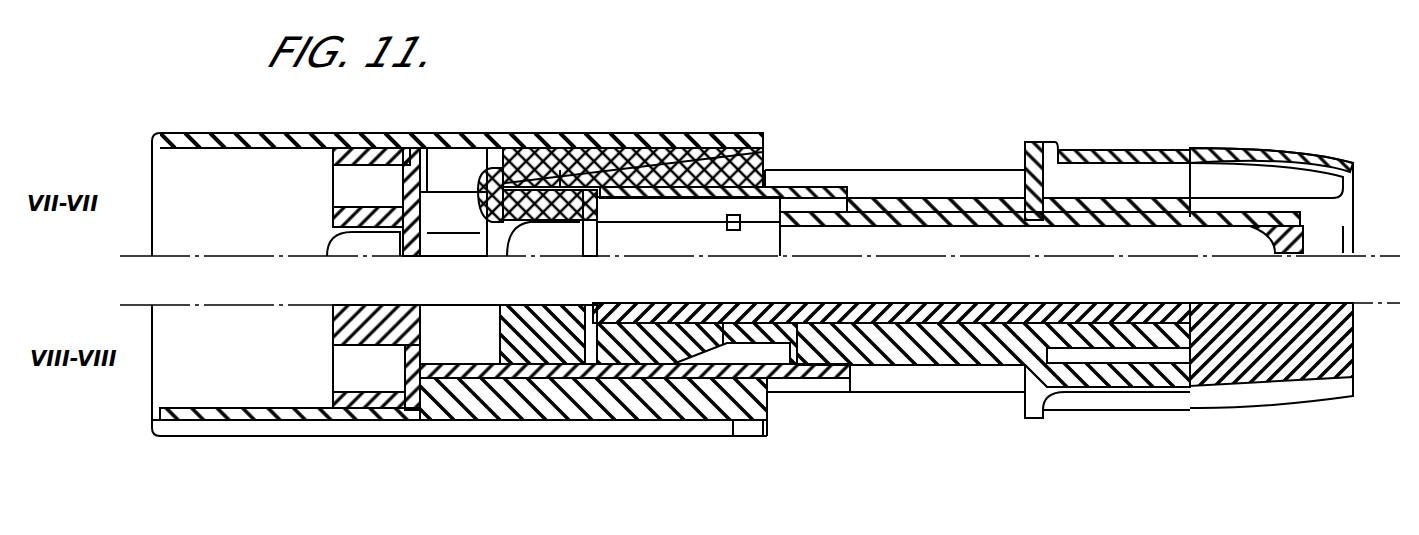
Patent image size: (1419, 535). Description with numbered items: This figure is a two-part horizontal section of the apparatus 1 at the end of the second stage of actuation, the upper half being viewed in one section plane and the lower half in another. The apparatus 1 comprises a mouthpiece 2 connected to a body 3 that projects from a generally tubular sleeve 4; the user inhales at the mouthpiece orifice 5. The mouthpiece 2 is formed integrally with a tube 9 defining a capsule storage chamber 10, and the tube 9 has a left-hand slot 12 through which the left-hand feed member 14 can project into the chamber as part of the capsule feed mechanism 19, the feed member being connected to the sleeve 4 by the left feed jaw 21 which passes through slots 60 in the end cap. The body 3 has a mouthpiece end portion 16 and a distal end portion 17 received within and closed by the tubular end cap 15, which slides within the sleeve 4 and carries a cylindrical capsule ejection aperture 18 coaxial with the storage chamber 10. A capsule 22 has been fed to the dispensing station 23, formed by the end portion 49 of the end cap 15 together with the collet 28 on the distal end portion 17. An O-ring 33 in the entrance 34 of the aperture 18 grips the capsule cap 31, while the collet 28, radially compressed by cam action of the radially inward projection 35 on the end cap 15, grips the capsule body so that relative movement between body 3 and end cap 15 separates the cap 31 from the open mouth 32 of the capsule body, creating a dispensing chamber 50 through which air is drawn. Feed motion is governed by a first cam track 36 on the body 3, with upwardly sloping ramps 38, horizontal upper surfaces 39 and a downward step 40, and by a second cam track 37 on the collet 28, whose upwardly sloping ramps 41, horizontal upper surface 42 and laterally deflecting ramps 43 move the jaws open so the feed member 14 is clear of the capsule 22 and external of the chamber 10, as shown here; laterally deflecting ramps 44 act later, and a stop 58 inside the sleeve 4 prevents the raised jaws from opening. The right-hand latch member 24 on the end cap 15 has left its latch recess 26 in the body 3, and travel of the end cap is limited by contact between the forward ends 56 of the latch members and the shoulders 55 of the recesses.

The apparatus 1 is at (1147, 82).
The mouthpiece 2 is at (1253, 153).
The body 3 is at (888, 200).
The tubular sleeve 4 is at (215, 133).
The mouthpiece orifice 5 is at (1340, 234).
The tube 9 is at (960, 210).
The capsule storage chamber 10 is at (1063, 235).
The left-hand slot 12 is at (757, 170).
The left-hand feed member 14 is at (493, 168).
The tubular end cap 15 is at (585, 378).
The mouthpiece end portion 16 is at (1148, 150).
The distal end portion 17 is at (660, 380).
The capsule ejection aperture 18 is at (306, 246).
The capsule feed mechanism 19 is at (517, 133).
The left feed jaw 21 is at (625, 200).
The capsule 22 is at (437, 222).
The dispensing station 23 is at (462, 292).
The right-hand latch member 24 is at (735, 352).
The right-hand latch recess 26 is at (790, 352).
The collet 28 is at (527, 222).
The capsule cap 31 is at (365, 220).
The open mouth 32 is at (452, 235).
The O-ring 33 is at (378, 150).
The entrance 34 is at (388, 267).
The radially inward projection 35 is at (477, 357).
The first cam track 36 is at (725, 175).
The second cam track 37 is at (530, 172).
The upwardly sloping ramps 38 is at (790, 180).
The horizontal upper surfaces 39 is at (717, 206).
The downward step 40 is at (663, 215).
The upwardly sloping ramps 41 is at (583, 195).
The horizontal upper surface 42 is at (562, 195).
The laterally deflecting ramps 43 is at (603, 235).
The laterally deflecting ramps 44 is at (650, 380).
The end portion 49 is at (357, 398).
The dispensing chamber 50 is at (487, 200).
The shoulders 55 is at (660, 362).
The forward ends 56 is at (655, 385).
The stop 58 is at (427, 200).
The slots 60 is at (500, 309).